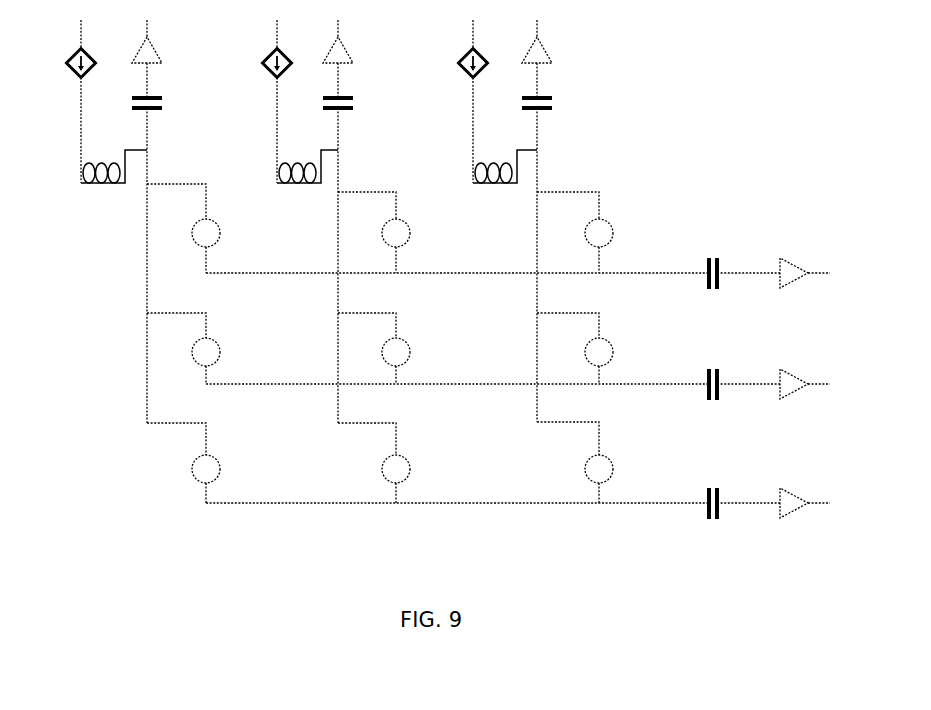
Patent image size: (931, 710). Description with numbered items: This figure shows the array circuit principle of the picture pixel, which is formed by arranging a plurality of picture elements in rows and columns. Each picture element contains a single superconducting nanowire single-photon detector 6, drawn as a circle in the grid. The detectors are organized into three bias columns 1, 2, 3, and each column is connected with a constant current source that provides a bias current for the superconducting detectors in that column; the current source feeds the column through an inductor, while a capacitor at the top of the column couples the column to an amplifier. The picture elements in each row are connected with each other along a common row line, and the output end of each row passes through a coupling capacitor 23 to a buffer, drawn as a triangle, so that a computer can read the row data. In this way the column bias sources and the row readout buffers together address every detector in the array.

The capacitor 23 is at (664, 318).
The SNSPD (superconducting nanowire single-photon detector) 6 is at (194, 463).
The bias circuit column 1 (current source Id1, capacitor C1, inductor L1) 1 is at (113, 110).
The bias circuit column 2 (current source Id2, capacitor C2, inductor L2) 2 is at (306, 110).
The bias circuit column 3 (current source Id3, capacitor C3, inductor L3) 3 is at (504, 110).